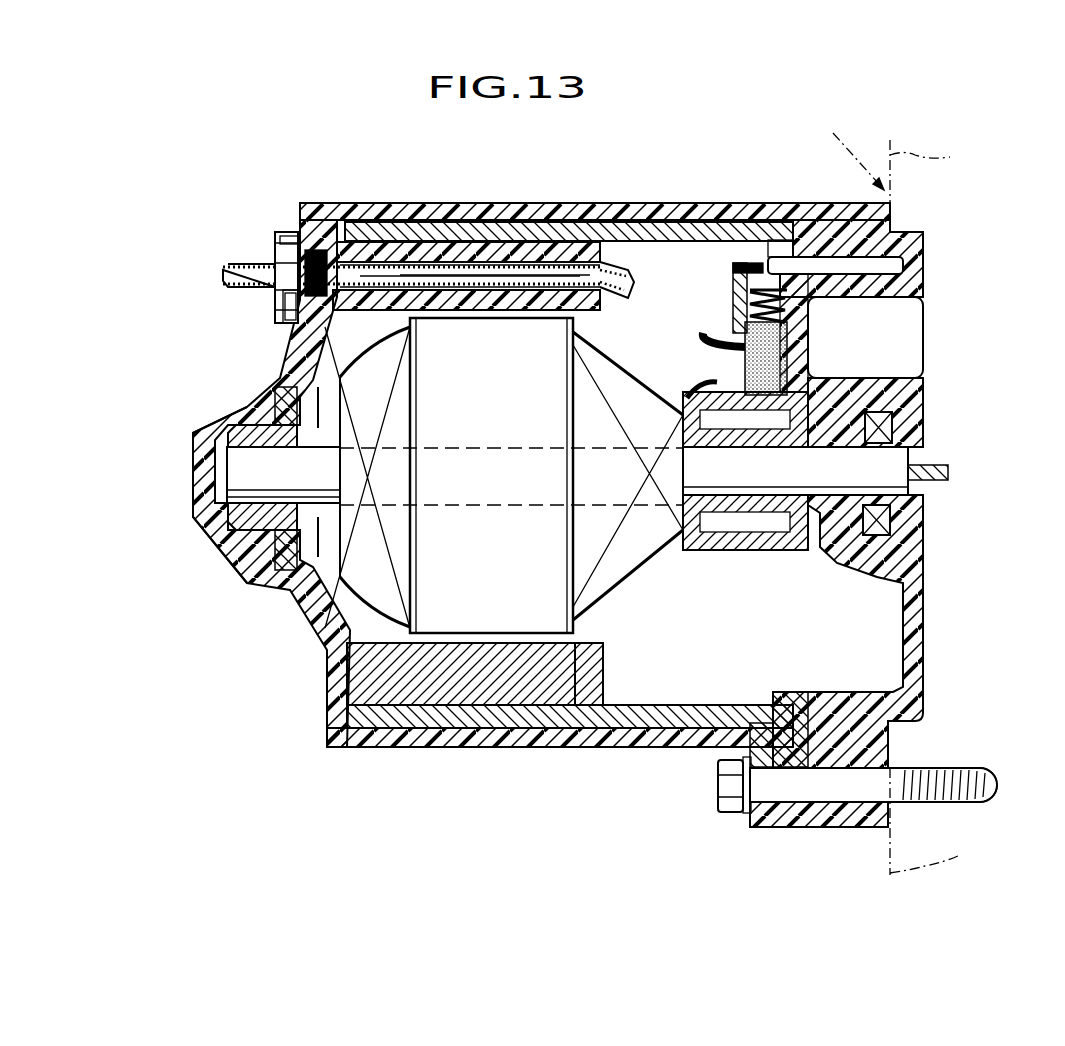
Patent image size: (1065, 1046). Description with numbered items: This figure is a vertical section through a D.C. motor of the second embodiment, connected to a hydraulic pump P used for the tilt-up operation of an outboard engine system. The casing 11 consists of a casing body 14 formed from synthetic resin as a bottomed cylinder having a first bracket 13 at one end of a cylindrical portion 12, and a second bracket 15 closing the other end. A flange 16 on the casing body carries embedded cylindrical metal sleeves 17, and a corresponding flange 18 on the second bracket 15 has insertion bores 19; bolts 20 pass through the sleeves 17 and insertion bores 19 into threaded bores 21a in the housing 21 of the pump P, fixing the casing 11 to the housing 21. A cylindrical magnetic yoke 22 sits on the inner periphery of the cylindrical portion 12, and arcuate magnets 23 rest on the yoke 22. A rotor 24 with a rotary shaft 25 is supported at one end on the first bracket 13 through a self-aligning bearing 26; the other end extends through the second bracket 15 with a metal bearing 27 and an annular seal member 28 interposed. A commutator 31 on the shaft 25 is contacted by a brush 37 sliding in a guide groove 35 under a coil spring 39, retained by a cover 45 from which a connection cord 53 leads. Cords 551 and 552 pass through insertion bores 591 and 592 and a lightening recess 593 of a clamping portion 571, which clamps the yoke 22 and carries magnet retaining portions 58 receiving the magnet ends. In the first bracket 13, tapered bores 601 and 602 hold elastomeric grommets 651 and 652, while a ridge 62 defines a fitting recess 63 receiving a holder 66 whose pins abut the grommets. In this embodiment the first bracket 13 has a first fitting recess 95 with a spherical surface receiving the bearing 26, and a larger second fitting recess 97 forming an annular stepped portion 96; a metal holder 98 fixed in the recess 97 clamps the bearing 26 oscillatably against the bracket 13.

The casing 11 is at (695, 158).
The cylindrical portion 12 is at (457, 743).
The first bracket 13 is at (290, 597).
The casing body 14 is at (711, 203).
The second bracket 15 is at (820, 203).
The flange 16 is at (775, 823).
The cylindrical metal sleeve 17 is at (781, 823).
The flange 18 is at (840, 818).
The insertion bore 19 is at (900, 790).
The bolt 20 is at (727, 787).
The housing 21 is at (908, 495).
The threaded bore 21a is at (983, 767).
The yoke 22 is at (497, 222).
The magnet 23 is at (355, 683).
The rotor 24 is at (498, 576).
The rotary shaft 25 is at (610, 505).
The self-aligning bearing 26 is at (242, 405).
The metal bearing 27 is at (853, 405).
The annular seal member 28 is at (918, 408).
The commutator 31 is at (725, 550).
The guide groove 35 is at (770, 350).
The brush 37 is at (747, 368).
The coil spring 39 is at (793, 313).
The cover 45 is at (735, 277).
The connection cord 53 is at (723, 333).
The cord 551 is at (448, 262).
The cord 552 is at (495, 324).
The clamping portion 571 is at (392, 250).
The magnet retaining portion 58 is at (598, 680).
The insertion bore 591 is at (367, 275).
The insertion bore 592 is at (470, 351).
The lightening recess 593 is at (580, 252).
The tapered bore 601 is at (298, 298).
The tapered bore 602 is at (226, 320).
The ridge 62 is at (295, 232).
The fitting recess 63 is at (278, 236).
The grommet 651 is at (310, 315).
The grommet 652 is at (222, 320).
The holder 66 is at (273, 262).
The first fitting recess 95 is at (217, 537).
The annular stepped portion 96 is at (300, 544).
The second fitting recess 97 is at (337, 560).
The metal holder 98 is at (300, 402).
The hydraulic pump P is at (853, 147).